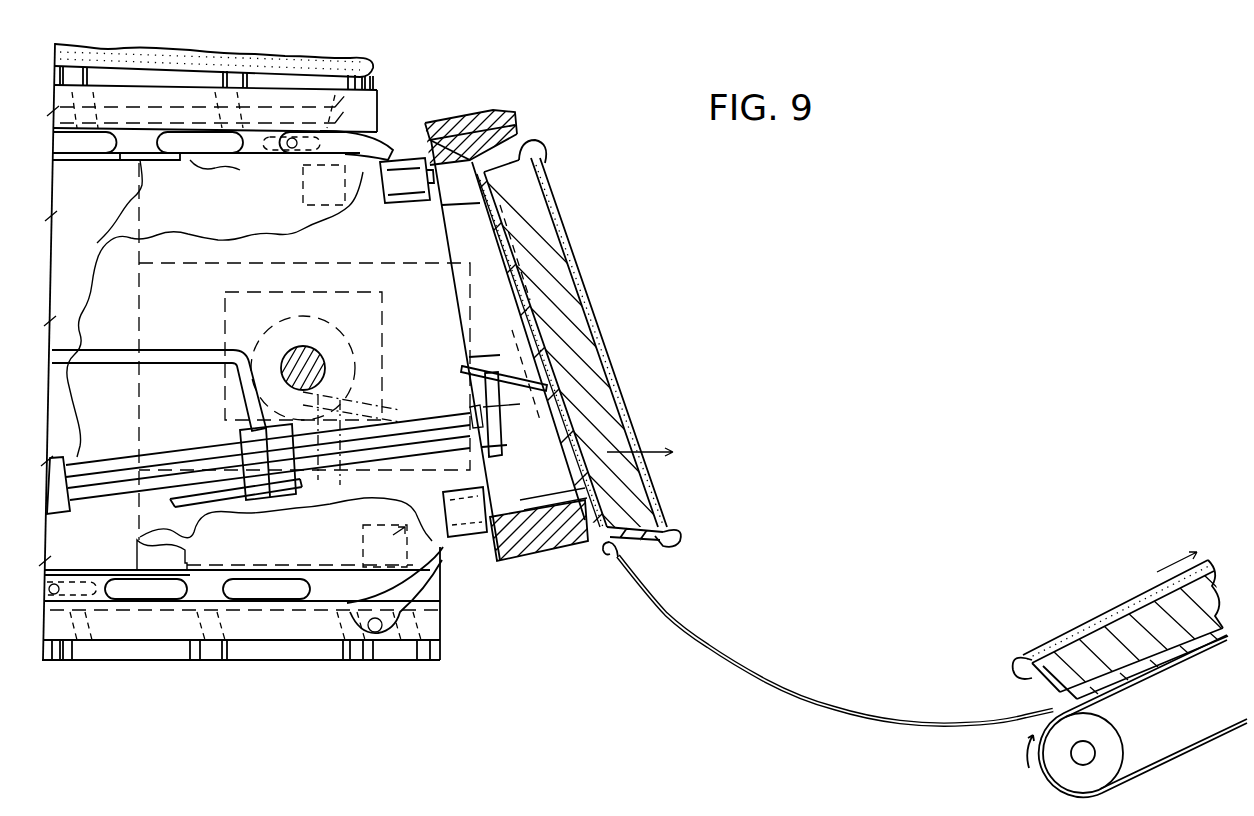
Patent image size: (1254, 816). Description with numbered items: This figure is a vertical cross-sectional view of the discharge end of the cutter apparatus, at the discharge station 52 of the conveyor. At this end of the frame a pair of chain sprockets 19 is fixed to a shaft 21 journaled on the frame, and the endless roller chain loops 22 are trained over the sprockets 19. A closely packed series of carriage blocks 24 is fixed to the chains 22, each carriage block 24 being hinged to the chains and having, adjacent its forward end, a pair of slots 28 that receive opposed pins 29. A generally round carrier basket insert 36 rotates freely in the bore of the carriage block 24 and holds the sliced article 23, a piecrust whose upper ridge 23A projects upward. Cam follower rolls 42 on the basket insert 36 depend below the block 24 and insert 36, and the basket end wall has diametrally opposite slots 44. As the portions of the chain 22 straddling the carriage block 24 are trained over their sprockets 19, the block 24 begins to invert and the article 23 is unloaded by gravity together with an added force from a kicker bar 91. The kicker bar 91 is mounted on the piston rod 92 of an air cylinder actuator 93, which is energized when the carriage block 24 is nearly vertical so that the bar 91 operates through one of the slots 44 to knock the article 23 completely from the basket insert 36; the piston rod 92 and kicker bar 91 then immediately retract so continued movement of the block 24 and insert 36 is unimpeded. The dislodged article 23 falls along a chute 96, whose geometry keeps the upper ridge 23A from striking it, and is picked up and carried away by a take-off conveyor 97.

The chain sprocket 19 is at (218, 547).
The shaft 21 is at (312, 360).
The roller chain loop 22 is at (390, 150).
The article 23 is at (322, 62).
The upper ridge of the piecrust 23A is at (529, 146).
The carriage block 24 is at (384, 101).
The slot 28 is at (503, 548).
The pin 29 is at (536, 556).
The carrier basket insert 36 is at (384, 71).
The cam follower roll 42 is at (410, 195).
The slot in basket end wall 44 is at (467, 317).
The discharge station 52 is at (520, 60).
The kicker bar 91 is at (568, 420).
The piston rod 92 is at (430, 420).
The air cylinder actuator 93 is at (163, 465).
The chute 96 is at (736, 660).
The take-off conveyor 97 is at (1029, 779).